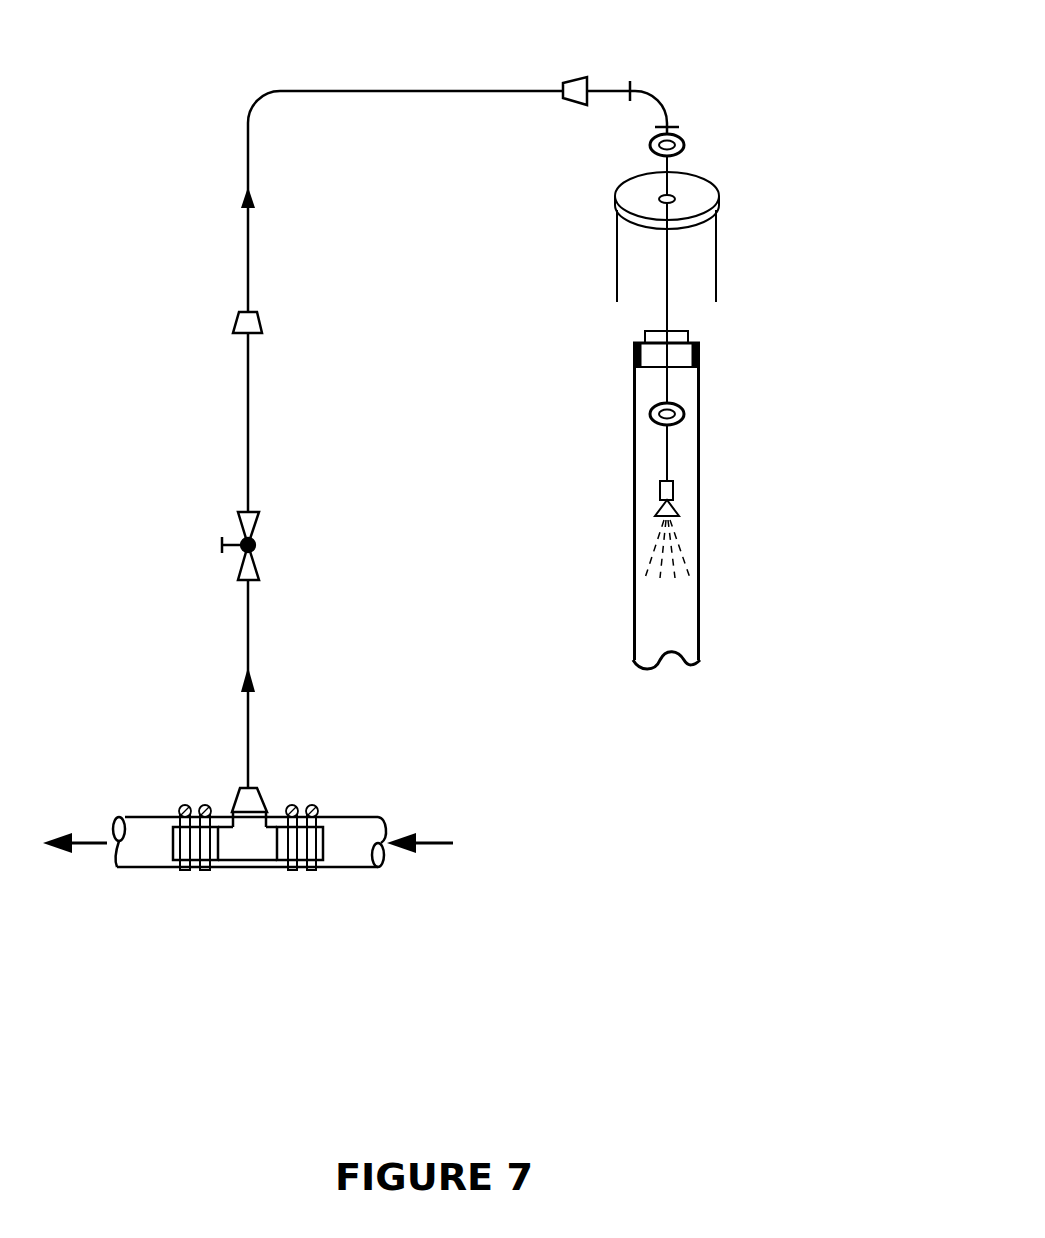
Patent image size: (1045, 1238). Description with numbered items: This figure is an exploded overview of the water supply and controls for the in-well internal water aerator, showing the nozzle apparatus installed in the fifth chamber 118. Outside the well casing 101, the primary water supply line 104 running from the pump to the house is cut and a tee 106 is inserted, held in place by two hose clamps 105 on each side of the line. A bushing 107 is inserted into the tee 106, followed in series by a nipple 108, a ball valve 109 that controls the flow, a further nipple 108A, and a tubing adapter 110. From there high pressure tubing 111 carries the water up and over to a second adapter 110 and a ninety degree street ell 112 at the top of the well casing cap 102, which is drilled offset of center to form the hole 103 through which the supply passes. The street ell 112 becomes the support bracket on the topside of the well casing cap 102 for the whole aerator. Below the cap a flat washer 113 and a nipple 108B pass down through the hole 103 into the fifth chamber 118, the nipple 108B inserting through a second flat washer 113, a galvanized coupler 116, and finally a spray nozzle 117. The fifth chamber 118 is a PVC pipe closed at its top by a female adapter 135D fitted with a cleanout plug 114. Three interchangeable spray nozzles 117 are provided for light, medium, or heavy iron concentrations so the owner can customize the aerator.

The well casing 101 is at (722, 233).
The well casing cap 102 is at (751, 192).
The hole in disc 103 is at (593, 178).
The primary water supply line 104 is at (248, 817).
The hose clamps 105 is at (205, 871).
The tee 106 is at (170, 851).
The bushing 107 is at (180, 780).
The nipple 108 is at (171, 684).
The nipple 108A is at (167, 422).
The nipple 108B is at (782, 302).
The ball valve 109 is at (173, 550).
The tubing adapter 110 is at (337, 180).
The high pressure tubing 111 is at (361, 196).
The 90 degree street ell 112 is at (761, 99).
The flat washer 113 is at (768, 267).
The cleanout plug 114 is at (766, 320).
The galvanized coupler 116 is at (773, 479).
The spray nozzle 117 is at (766, 539).
The fifth chamber 118 is at (760, 506).
The female adapter 135D is at (765, 347).